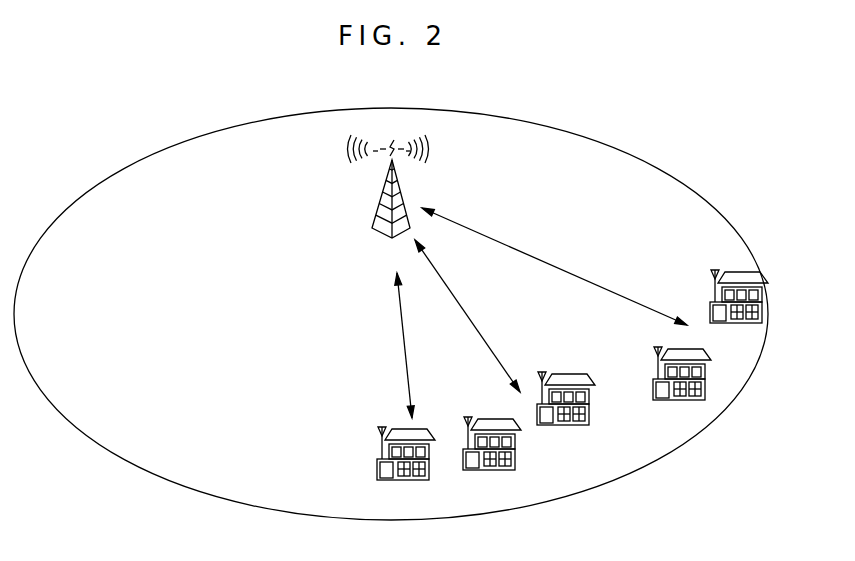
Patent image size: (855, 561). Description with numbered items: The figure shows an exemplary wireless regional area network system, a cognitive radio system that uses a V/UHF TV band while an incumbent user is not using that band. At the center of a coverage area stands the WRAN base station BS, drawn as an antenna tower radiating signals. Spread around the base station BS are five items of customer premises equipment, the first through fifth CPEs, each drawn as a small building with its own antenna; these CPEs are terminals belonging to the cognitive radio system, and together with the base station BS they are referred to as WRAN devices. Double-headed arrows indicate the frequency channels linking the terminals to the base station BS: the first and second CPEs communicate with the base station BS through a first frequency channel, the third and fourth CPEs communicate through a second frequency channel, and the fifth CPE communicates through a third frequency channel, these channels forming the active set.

The WRAN base station BS is at (388, 198).